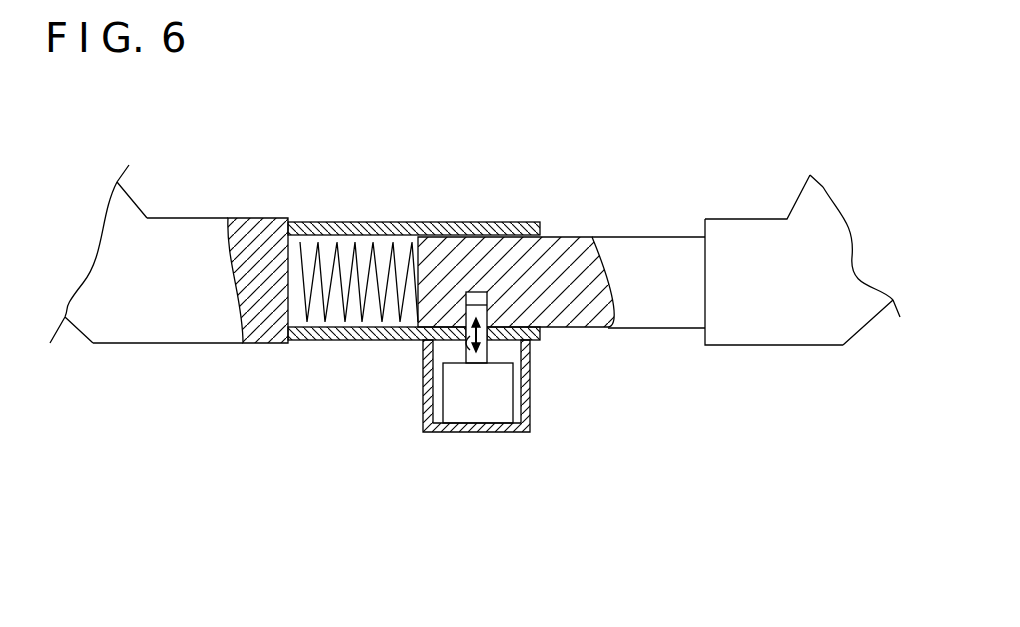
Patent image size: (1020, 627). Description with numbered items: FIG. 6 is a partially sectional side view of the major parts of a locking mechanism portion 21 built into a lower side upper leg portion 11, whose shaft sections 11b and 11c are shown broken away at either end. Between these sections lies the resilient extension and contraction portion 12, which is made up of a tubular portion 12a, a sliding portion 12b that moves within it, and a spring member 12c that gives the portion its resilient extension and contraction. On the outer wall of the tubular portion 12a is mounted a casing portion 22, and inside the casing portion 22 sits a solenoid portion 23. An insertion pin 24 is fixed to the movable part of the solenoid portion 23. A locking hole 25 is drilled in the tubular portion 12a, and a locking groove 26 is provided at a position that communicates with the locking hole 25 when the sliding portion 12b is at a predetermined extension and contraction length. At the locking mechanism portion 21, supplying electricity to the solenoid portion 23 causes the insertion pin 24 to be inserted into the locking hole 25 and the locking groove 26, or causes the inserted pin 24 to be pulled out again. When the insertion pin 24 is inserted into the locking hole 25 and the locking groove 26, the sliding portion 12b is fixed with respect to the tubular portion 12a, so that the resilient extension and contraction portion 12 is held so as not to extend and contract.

The lower side upper leg portion 11 is at (475, 315).
The first shaft portion 11b is at (161, 323).
The second shaft portion 11c is at (757, 313).
The resilient extension and contraction portion 12 is at (468, 263).
The tubular portion 12a is at (313, 335).
The sliding portion 12b is at (652, 307).
The spring member 12c is at (345, 252).
The locking mechanism portion 21 is at (476, 443).
The casing portion 22 is at (423, 417).
The solenoid portion 23 is at (492, 410).
The insertion pin 24 is at (485, 353).
The locking hole 25 is at (466, 343).
The locking groove 26 is at (481, 293).